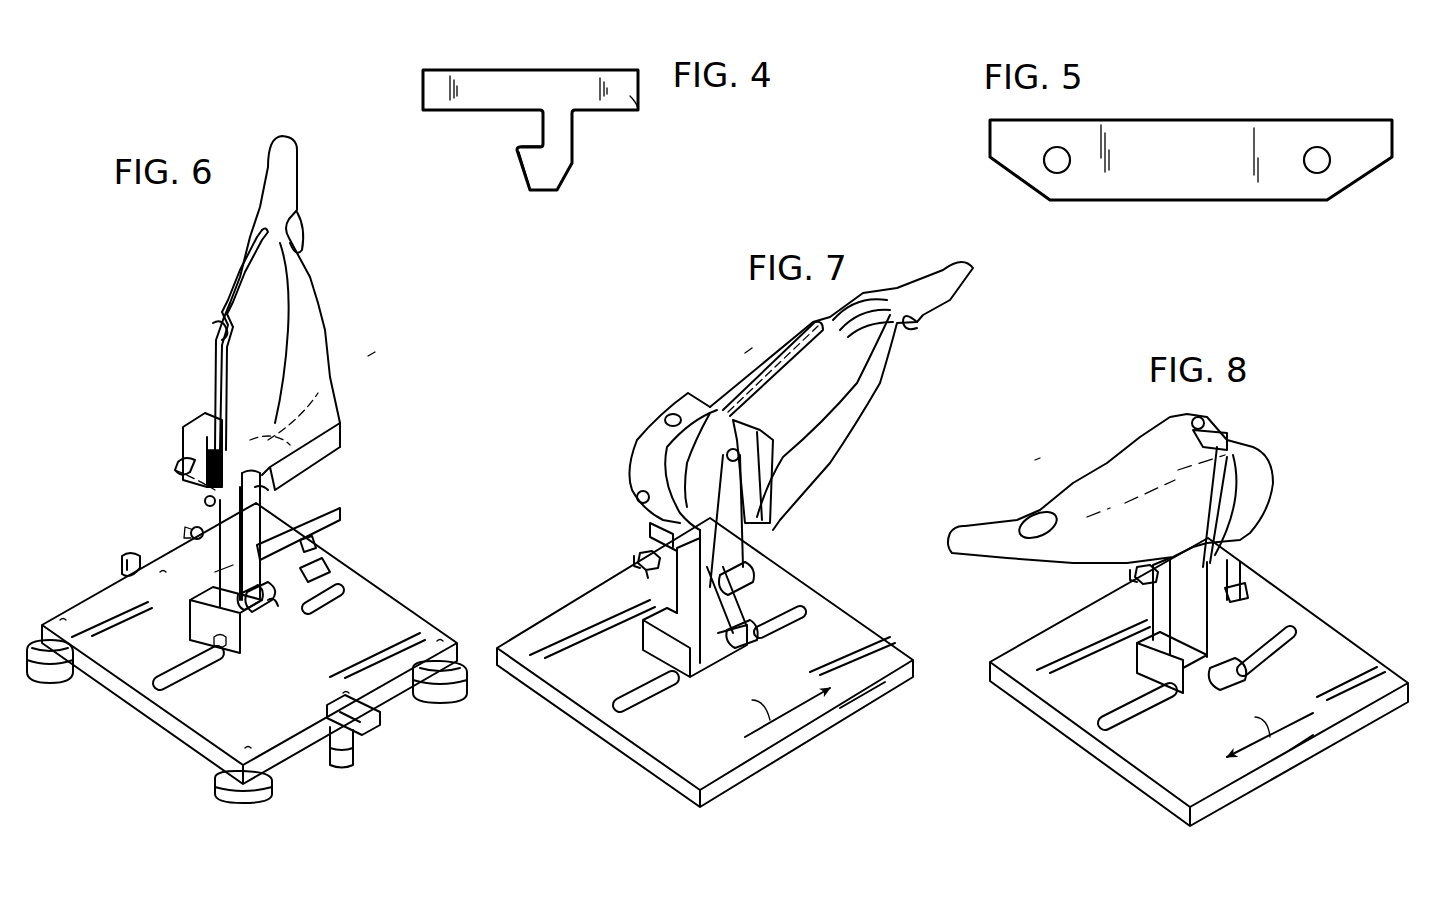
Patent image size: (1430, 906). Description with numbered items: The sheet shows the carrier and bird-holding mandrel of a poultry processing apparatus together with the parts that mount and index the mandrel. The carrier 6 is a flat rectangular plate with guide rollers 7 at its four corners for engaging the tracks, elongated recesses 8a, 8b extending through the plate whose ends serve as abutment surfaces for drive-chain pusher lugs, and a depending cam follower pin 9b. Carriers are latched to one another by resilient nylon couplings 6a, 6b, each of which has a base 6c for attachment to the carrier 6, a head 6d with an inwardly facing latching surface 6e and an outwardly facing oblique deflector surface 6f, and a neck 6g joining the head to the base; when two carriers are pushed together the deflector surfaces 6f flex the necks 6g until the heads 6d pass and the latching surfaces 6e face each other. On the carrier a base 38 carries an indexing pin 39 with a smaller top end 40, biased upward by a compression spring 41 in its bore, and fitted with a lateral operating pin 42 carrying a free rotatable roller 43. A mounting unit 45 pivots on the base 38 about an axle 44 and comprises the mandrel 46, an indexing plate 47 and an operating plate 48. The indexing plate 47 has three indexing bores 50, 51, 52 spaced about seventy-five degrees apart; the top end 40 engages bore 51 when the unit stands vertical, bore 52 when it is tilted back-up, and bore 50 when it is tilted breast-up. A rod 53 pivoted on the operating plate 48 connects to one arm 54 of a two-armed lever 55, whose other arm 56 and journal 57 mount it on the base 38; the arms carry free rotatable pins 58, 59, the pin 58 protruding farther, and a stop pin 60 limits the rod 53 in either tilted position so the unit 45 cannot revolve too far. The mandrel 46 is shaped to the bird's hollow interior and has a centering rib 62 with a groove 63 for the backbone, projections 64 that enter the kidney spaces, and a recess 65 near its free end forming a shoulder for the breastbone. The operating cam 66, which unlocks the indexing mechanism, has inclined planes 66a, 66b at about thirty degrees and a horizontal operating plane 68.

In FIG. 6, the carrier 6 is at (420, 635).
In FIG. 7, the carrier 6 is at (838, 640).
In FIG. 8, the carrier 6 is at (1199, 682).
In FIG. 6, the coupling 6a is at (122, 558).
In FIG. 4, the coupling 6b is at (594, 50).
In FIG. 6, the coupling 6b is at (378, 722).
In FIG. 4, the base 6c is at (636, 100).
In FIG. 4, the head 6d is at (552, 163).
In FIG. 4, the latching surface 6e is at (522, 143).
In FIG. 4, the deflector surface 6f is at (520, 170).
In FIG. 4, the neck 6g is at (567, 131).
In FIG. 6, the guide rollers 7 is at (58, 682).
In FIG. 6, the elongated recess 8a is at (192, 675).
In FIG. 6, the elongated recess 8b is at (330, 597).
In FIG. 6, the cam follower pin 9b is at (347, 770).
In FIG. 6, the base 38 is at (245, 640).
In FIG. 6, the indexing pin 39 is at (215, 575).
In FIG. 6, the top end 40 is at (173, 470).
In FIG. 6, the compression spring 41 is at (212, 640).
In FIG. 6, the operating pin 42 is at (192, 530).
In FIG. 7, the operating pin 42 is at (640, 557).
In FIG. 8, the operating pin 42 is at (1133, 580).
In FIG. 6, the roller 43 is at (205, 503).
In FIG. 6, the axle 44 is at (322, 397).
In FIG. 6, the mounting unit 45 is at (372, 353).
In FIG. 7, the mounting unit 45 is at (752, 348).
In FIG. 8, the mounting unit 45 is at (1040, 458).
In FIG. 6, the mandrel 46 is at (308, 297).
In FIG. 7, the mandrel 46 is at (868, 395).
In FIG. 8, the mandrel 46 is at (1113, 458).
In FIG. 6, the indexing plate 47 is at (200, 430).
In FIG. 7, the indexing plate 47 is at (648, 442).
In FIG. 6, the operating plate 48 is at (345, 432).
In FIG. 6, the indexing bore 50 is at (180, 462).
In FIG. 7, the indexing bore 50 is at (670, 413).
In FIG. 7, the indexing bore 51 is at (637, 498).
In FIG. 8, the indexing bore 52 is at (1205, 420).
In FIG. 6, the rod 53 is at (305, 478).
In FIG. 6, the lever arm 54 is at (300, 527).
In FIG. 6, the two-armed lever 55 is at (312, 543).
In FIG. 6, the lever arm 56 is at (278, 592).
In FIG. 6, the journal 57 is at (275, 607).
In FIG. 6, the pin 58 is at (250, 615).
In FIG. 7, the pin 58 is at (752, 575).
In FIG. 8, the pin 58 is at (1248, 677).
In FIG. 6, the pin 59 is at (325, 570).
In FIG. 7, the pin 59 is at (752, 643).
In FIG. 8, the pin 59 is at (1245, 585).
In FIG. 6, the stop pin 60 is at (290, 500).
In FIG. 6, the centering rib 62 is at (252, 245).
In FIG. 6, the groove 63 is at (245, 270).
In FIG. 6, the projections 64 is at (220, 330).
In FIG. 6, the recess 65 is at (297, 224).
In FIG. 7, the recess 65 is at (912, 325).
In FIG. 8, the recess 65 is at (1025, 518).
In FIG. 5, the operating cam 66 is at (1213, 135).
In FIG. 5, the inclined plane 66a is at (1362, 180).
In FIG. 5, the inclined plane 66b is at (1015, 178).
In FIG. 5, the operating plane 68 is at (1180, 201).